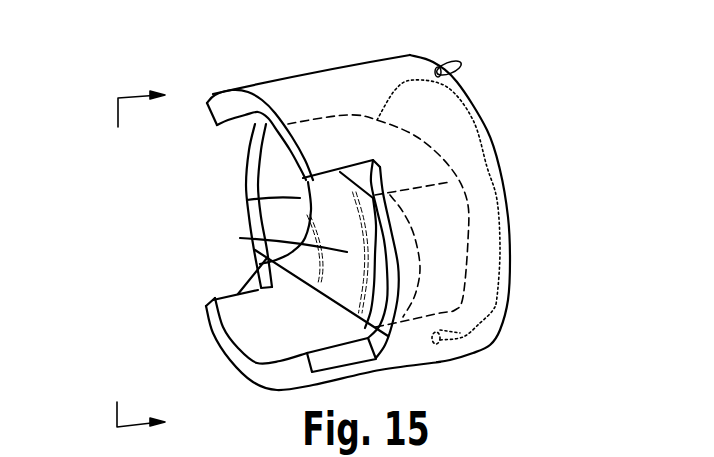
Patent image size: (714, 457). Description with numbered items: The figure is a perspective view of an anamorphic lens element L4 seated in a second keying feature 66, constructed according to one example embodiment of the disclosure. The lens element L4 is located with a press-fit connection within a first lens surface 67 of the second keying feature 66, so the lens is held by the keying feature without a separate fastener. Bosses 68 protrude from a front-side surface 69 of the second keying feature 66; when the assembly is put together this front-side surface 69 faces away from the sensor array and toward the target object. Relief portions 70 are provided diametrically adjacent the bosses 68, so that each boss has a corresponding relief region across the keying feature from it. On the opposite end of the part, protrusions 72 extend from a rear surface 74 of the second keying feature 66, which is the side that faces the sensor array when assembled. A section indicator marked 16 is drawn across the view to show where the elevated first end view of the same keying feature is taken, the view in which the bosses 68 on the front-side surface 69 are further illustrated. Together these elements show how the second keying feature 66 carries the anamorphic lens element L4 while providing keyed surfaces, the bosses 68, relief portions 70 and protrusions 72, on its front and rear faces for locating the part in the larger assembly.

The section line 16- 16 is at (154, 253).
The second keying feature 66 is at (257, 247).
The first lens surface 67 is at (253, 205).
The bosses 68 is at (266, 92).
The front-side surface 69 is at (378, 344).
The relief portions 70 is at (252, 155).
The protrusions 72 is at (351, 78).
The rear surface 74 is at (493, 228).
The anamorphic lens element L4 is at (257, 278).